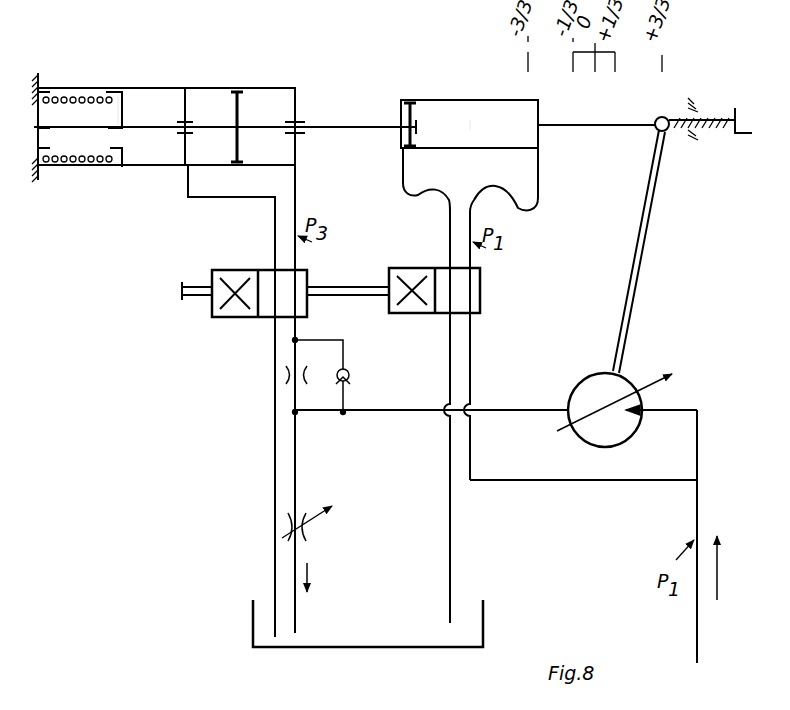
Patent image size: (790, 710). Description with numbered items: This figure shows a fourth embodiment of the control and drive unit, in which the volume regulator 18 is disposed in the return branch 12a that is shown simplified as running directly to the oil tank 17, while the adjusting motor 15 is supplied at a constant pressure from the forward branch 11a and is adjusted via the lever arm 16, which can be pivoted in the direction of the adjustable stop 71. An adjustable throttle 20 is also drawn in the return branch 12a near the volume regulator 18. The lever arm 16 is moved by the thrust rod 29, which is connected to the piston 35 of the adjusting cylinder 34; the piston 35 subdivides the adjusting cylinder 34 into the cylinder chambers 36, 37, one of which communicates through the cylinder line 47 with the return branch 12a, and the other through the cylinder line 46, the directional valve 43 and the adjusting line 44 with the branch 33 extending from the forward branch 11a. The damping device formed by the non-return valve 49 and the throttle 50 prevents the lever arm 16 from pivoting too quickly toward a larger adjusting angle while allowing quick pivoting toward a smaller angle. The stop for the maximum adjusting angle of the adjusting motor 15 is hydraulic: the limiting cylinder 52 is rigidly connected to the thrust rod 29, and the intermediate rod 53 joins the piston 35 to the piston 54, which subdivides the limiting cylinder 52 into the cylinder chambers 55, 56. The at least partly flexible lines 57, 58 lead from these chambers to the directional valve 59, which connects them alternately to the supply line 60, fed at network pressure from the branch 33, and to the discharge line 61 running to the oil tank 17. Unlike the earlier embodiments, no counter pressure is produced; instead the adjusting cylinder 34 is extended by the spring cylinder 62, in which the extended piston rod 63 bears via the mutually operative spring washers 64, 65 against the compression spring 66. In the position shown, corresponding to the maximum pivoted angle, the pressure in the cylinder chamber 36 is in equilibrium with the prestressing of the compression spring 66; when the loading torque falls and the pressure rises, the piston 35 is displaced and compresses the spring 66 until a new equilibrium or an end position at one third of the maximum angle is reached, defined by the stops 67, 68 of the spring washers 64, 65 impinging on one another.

The forward branch 11a is at (697, 472).
The return branch 12a is at (510, 412).
The adjusting motor 15 is at (619, 382).
The lever arm 16 is at (644, 233).
The oil tank 17 is at (252, 612).
The volume regulator 18 is at (309, 532).
The adjustable throttle 20 is at (320, 508).
The thrust rod 29 is at (598, 128).
The branch 33 is at (580, 482).
The adjusting cylinder 34 is at (257, 88).
The piston 35 is at (240, 112).
The cylinder chamber 36 is at (278, 94).
The cylinder chamber 37 is at (218, 97).
The directional valve 43 is at (228, 280).
The adjusting line 44 is at (275, 440).
The cylinder line 46 is at (190, 198).
The cylinder line 47 is at (295, 182).
The non-return valve 49 is at (348, 371).
The throttle 50 is at (283, 380).
The limiting cylinder 52 is at (522, 104).
The intermediate rod 53 is at (340, 126).
The piston 54 is at (413, 112).
The cylinder chamber 55 is at (400, 112).
The cylinder chamber 56 is at (465, 112).
The line 57 is at (400, 185).
The line 58 is at (538, 168).
The directional valve 59 is at (481, 282).
The supply line 60 is at (472, 354).
The discharge line 61 is at (447, 348).
The spring cylinder 62 is at (110, 167).
The piston rod 63 is at (196, 124).
The spring washer 64 is at (48, 110).
The spring washer 65 is at (122, 112).
The compression spring 66 is at (86, 163).
The stop 67 is at (107, 123).
The stop 68 is at (50, 124).
The adjustable stop 71 is at (698, 102).